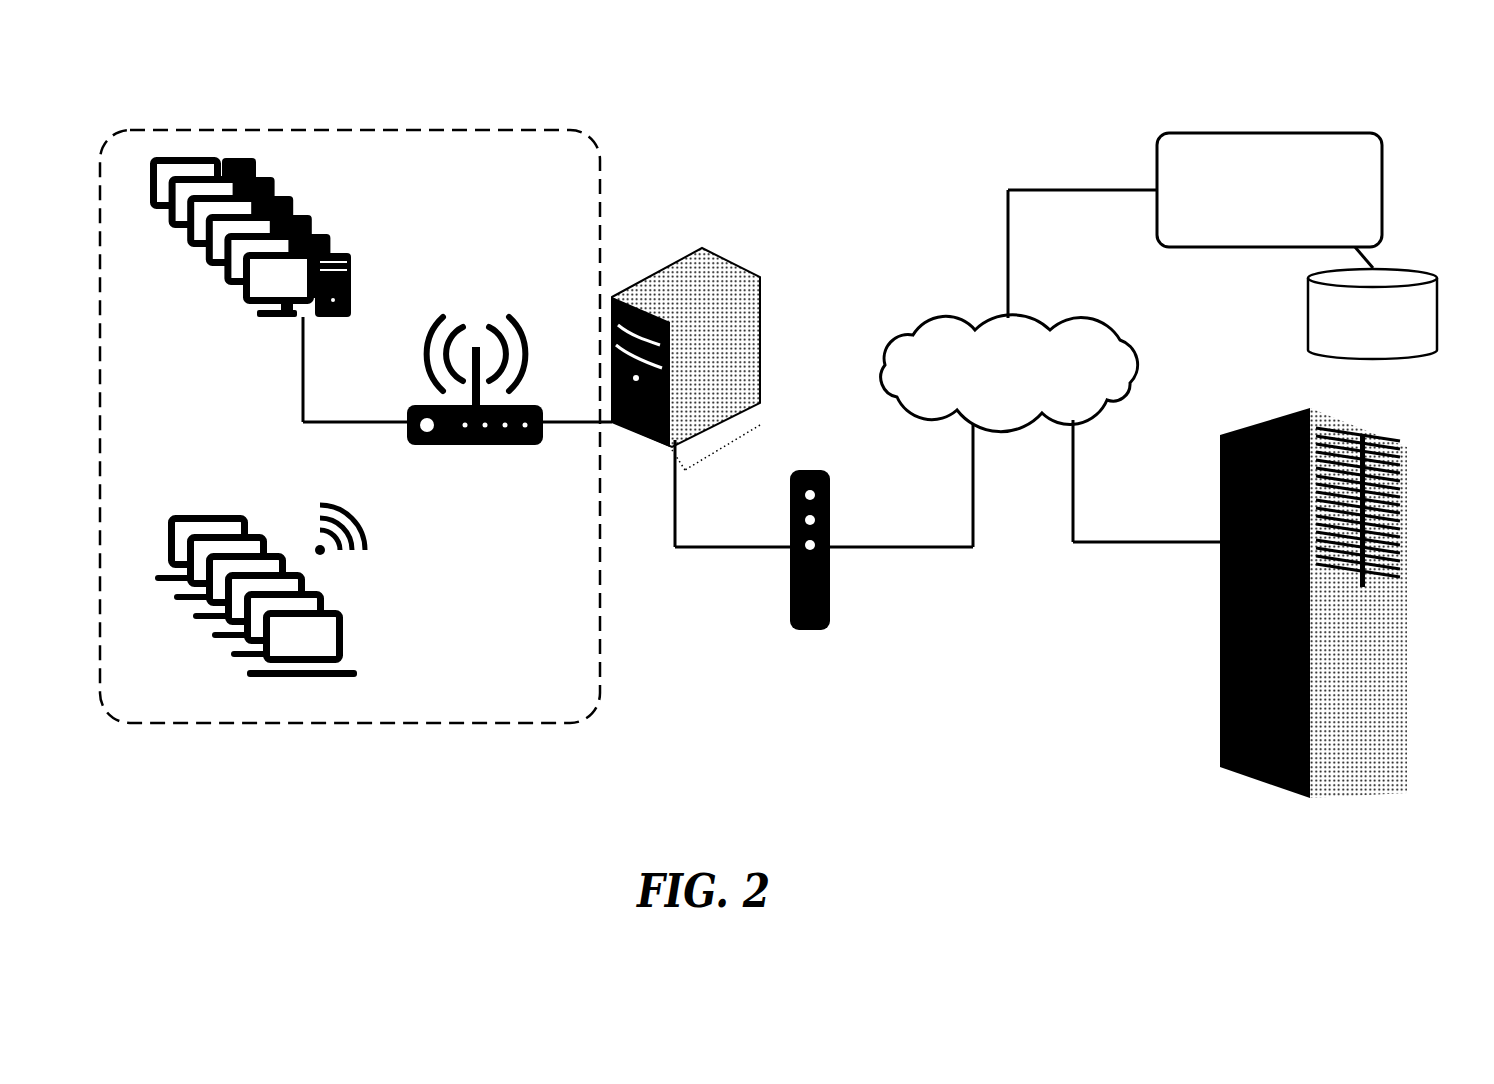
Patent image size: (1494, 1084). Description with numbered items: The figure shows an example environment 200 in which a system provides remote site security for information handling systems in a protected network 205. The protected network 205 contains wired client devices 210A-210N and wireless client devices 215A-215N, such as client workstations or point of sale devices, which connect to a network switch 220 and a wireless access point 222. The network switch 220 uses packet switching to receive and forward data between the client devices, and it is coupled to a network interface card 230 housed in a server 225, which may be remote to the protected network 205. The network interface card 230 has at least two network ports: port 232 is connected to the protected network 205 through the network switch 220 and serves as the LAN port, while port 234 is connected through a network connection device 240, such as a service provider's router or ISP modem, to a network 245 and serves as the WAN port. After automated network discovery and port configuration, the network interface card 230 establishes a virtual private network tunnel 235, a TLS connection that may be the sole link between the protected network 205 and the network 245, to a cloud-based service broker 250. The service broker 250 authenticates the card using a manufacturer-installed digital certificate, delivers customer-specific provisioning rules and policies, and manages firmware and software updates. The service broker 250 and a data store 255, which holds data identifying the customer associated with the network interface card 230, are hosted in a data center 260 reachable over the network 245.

The environment 200 is at (256, 53).
The protected network 205 is at (593, 713).
The wired client devices 210A-210N is at (296, 198).
The wireless client devices 215A-215N is at (343, 640).
The network switch 220 is at (540, 440).
The wireless access point 222 is at (366, 550).
The server 225 is at (762, 320).
The network interface card 230 is at (762, 425).
The port 232 is at (658, 422).
The port 234 is at (678, 436).
The virtual private network tunnel 235 is at (703, 563).
The network connection device 240 is at (832, 513).
The network 245 is at (1073, 380).
The service broker 250 is at (1365, 201).
The data store 255 is at (1395, 345).
The data center 260 is at (1405, 514).